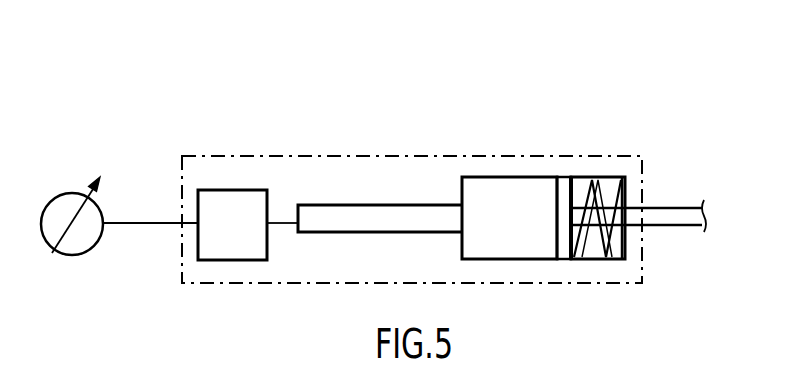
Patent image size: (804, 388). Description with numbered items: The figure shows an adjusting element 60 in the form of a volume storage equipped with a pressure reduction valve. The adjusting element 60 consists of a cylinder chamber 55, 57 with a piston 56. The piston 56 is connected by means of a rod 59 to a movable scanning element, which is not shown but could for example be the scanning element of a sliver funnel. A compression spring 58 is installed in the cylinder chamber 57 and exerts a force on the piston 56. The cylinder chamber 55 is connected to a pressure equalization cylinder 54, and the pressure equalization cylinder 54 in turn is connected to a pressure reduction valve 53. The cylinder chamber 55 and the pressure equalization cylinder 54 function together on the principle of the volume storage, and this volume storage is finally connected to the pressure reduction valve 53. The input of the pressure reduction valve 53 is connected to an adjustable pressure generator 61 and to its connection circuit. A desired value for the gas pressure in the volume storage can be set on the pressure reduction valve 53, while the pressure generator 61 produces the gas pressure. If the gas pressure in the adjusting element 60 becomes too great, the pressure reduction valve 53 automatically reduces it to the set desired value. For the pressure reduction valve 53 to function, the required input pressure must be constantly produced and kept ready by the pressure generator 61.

The pressure reduction valve 53 is at (238, 195).
The pressure equalization cylinder 54 is at (322, 210).
The cylinder chamber 55 is at (480, 185).
The piston 56 is at (562, 185).
The cylinder chamber 57 is at (610, 185).
The compression spring 58 is at (596, 250).
The rod 59 is at (672, 220).
The adjusting element 60 is at (203, 156).
The adjustable pressure generator 61 is at (85, 257).